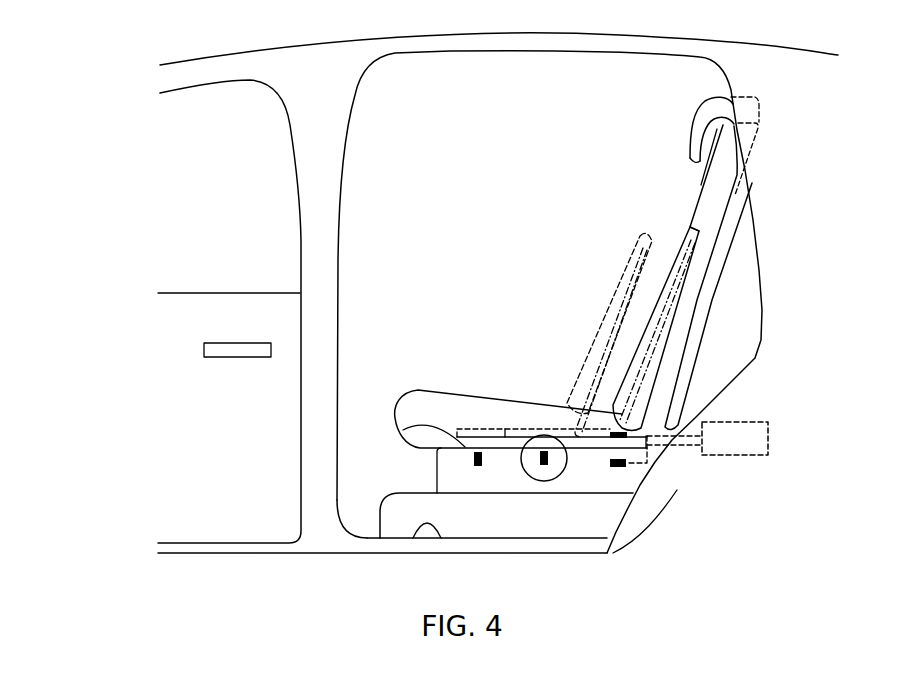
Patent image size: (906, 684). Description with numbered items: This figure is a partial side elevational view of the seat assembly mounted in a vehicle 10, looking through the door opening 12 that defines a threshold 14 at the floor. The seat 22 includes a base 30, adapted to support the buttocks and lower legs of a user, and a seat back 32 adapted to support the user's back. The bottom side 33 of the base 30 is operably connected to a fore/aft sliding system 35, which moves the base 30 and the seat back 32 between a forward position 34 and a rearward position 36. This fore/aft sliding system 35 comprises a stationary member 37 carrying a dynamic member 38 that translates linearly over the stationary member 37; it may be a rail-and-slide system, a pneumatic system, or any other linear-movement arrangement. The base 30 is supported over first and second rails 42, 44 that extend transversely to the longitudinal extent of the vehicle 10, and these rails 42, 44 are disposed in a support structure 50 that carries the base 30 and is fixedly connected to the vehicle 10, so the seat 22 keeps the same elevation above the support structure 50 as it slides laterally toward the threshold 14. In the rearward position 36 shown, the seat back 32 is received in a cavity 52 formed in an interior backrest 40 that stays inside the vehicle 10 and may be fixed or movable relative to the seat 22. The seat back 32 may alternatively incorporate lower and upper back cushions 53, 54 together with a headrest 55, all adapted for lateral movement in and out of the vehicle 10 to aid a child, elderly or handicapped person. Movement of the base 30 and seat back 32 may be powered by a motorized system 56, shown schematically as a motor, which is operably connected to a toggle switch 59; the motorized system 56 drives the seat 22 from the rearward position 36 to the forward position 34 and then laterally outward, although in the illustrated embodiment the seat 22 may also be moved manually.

The vehicle 10 is at (165, 48).
The door opening 12 is at (420, 173).
The threshold 14 is at (413, 539).
The seat 22 is at (483, 398).
The base 30 is at (410, 417).
The seat back 32 is at (650, 297).
The bottom side 33 is at (512, 437).
The forward position 34 is at (574, 306).
The fore/aft sliding system 35 is at (478, 420).
The rearward position 36 is at (668, 225).
The stationary member 37 is at (407, 432).
The dynamic member 38 is at (541, 428).
The interior backrest 40 is at (725, 270).
The first rail 42 is at (478, 482).
The second rail 44 is at (554, 478).
The support structure 50 is at (458, 476).
The cavity 52 is at (658, 308).
The lower back cushion 53 is at (583, 340).
The upper back cushion 54 is at (699, 198).
The headrest 55 is at (708, 103).
The motorized system 56 is at (758, 423).
The toggle switch 59 is at (622, 469).